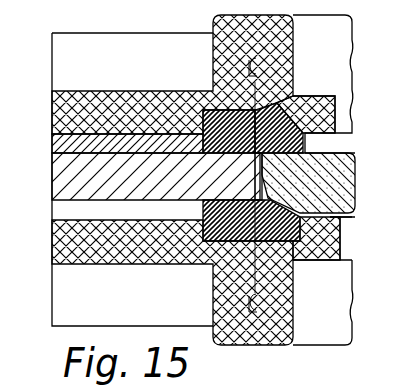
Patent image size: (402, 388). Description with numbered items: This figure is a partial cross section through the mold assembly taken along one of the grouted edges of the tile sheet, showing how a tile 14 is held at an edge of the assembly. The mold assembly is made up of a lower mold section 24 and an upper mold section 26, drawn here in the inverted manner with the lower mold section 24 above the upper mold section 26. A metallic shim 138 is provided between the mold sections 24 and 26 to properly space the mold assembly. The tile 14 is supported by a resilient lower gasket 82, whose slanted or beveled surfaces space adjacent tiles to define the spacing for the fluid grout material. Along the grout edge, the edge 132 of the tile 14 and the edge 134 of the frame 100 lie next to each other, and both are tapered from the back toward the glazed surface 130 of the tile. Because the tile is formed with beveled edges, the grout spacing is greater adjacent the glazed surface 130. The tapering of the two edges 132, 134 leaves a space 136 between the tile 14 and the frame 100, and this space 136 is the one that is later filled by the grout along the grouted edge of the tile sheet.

The tile 14 is at (357, 169).
The lower mold section 24 is at (124, 107).
The upper mold section 26 is at (118, 263).
The lower gasket 82 is at (296, 92).
The frame 100 is at (58, 193).
The glazed surface 130 is at (358, 232).
The edge of tile 132 is at (258, 156).
The edge of frame 134 is at (252, 170).
The space 136 is at (260, 178).
The metallic shim 138 is at (56, 142).